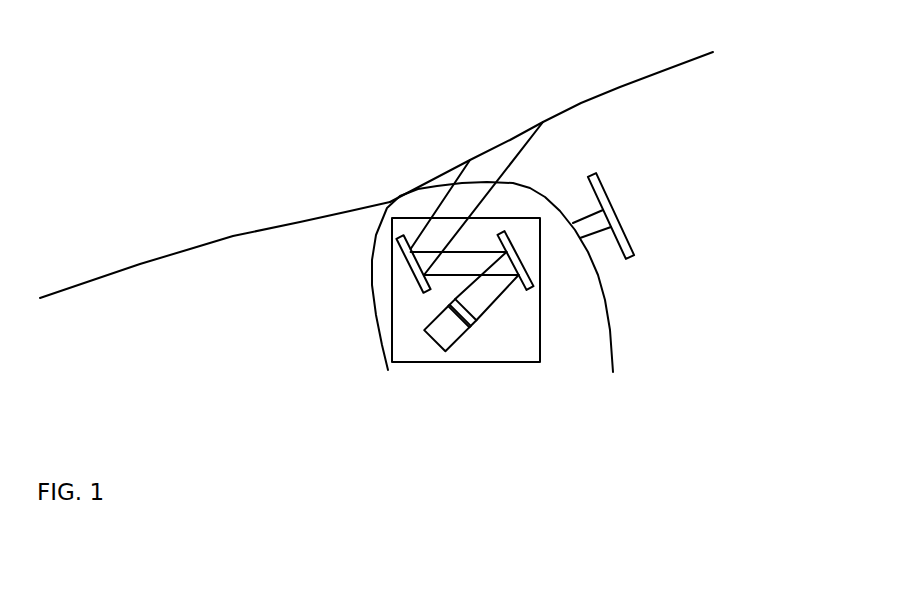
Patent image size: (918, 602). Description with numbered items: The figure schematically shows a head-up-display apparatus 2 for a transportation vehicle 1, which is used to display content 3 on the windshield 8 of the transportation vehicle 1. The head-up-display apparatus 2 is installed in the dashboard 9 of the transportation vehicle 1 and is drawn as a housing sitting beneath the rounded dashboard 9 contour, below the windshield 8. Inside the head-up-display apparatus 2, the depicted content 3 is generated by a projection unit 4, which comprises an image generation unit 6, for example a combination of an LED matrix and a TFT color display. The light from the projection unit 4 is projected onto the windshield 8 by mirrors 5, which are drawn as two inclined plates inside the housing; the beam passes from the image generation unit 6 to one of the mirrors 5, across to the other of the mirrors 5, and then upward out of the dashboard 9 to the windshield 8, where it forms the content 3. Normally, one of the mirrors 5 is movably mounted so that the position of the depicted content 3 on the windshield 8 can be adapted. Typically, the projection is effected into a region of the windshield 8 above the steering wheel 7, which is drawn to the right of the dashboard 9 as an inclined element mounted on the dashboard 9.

The transportation vehicle 1 is at (233, 236).
The head-up-display apparatus 2 is at (392, 325).
The content 3 is at (492, 145).
The projection unit 4 is at (435, 338).
The mirrors 5 is at (410, 265).
The image generation unit 6 is at (462, 320).
The steering wheel 7 is at (627, 238).
The windshield 8 is at (581, 103).
The dashboard 9 is at (538, 193).